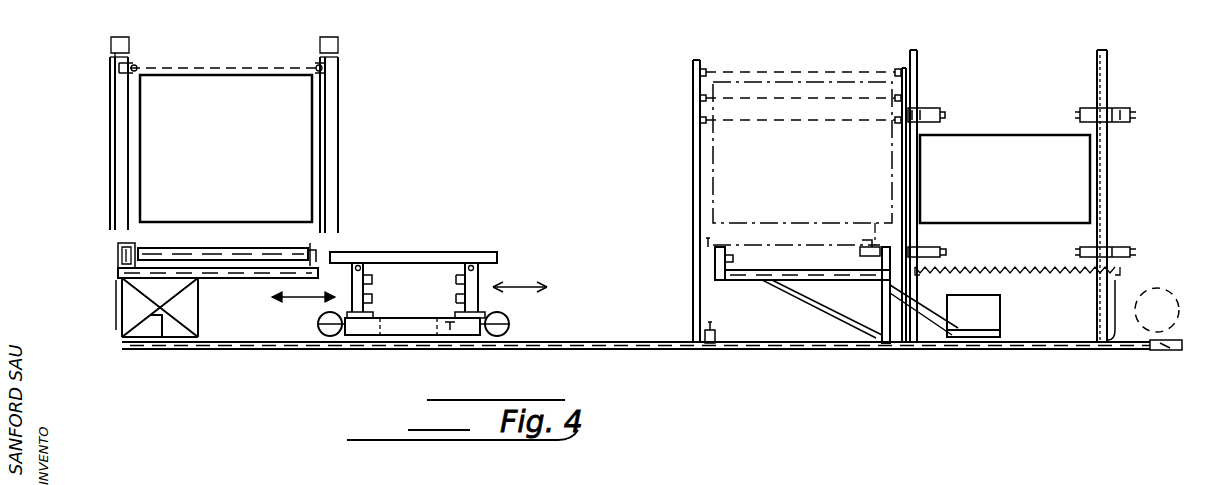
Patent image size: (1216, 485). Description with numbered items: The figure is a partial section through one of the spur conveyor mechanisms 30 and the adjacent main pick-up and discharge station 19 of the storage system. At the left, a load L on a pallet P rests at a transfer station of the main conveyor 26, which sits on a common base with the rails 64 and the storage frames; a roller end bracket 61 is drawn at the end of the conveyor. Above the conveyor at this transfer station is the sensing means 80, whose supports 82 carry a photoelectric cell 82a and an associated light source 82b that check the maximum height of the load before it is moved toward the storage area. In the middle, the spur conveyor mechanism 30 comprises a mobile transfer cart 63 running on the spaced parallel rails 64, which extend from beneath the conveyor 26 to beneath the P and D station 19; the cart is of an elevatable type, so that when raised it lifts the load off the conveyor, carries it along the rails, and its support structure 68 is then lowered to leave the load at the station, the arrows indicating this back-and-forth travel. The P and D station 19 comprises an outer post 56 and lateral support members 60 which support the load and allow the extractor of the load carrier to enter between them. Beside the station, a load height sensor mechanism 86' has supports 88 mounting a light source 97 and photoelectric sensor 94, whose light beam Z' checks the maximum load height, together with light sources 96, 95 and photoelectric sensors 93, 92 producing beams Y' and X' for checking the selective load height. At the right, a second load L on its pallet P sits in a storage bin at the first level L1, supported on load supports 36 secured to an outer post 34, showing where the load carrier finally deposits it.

The pick-up and discharge station 19 is at (752, 284).
The main conveyor 26 is at (292, 252).
The spur conveyor mechanism 30 is at (468, 242).
The outer post 34 is at (912, 345).
The load support 36 is at (1075, 248).
The outer post 56 is at (886, 342).
The lateral support member 60 is at (860, 250).
The end bracket 61 is at (150, 250).
The mobile transfer cart 63 is at (420, 336).
The rail 64 is at (606, 346).
The support structure 68 is at (414, 252).
The sensing means 80 is at (98, 130).
The support 82 is at (108, 165).
The photoelectric cell 82a is at (136, 66).
The light source 82b is at (316, 66).
The load height sensor 86' is at (727, 35).
The support 88 is at (692, 154).
The photoelectric sensor 92 is at (895, 122).
The photoelectric sensor 93 is at (895, 100).
The photoelectric sensor 94 is at (893, 76).
The light source 95 is at (698, 120).
The light source 96 is at (698, 98).
The light source 97 is at (698, 72).
The pallet P is at (226, 236).
The load L is at (212, 73).
The first level L1 is at (1092, 237).
The light beam X' is at (800, 109).
The light beam Y' is at (800, 58).
The light beam Z' is at (800, 47).